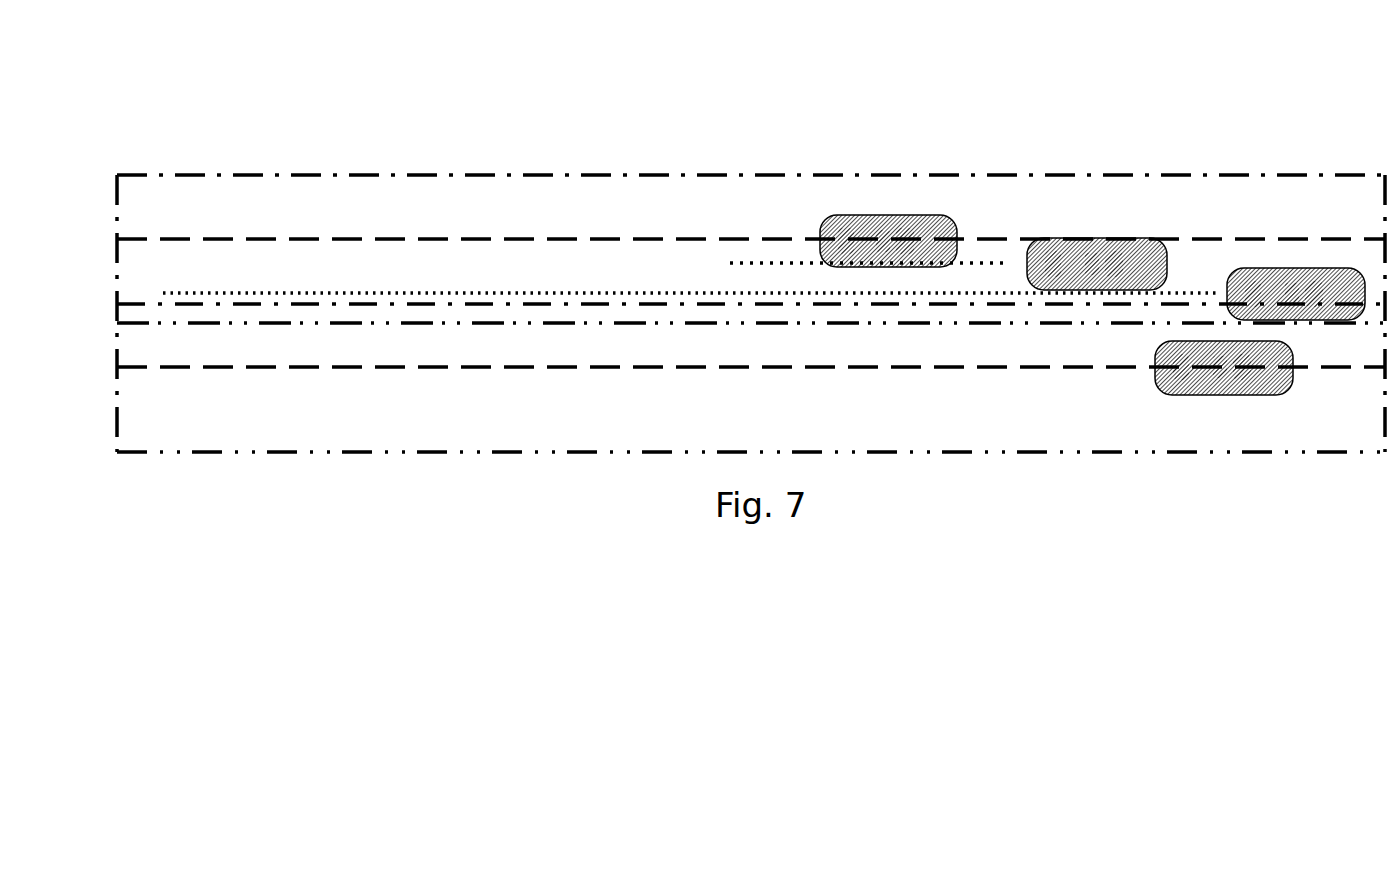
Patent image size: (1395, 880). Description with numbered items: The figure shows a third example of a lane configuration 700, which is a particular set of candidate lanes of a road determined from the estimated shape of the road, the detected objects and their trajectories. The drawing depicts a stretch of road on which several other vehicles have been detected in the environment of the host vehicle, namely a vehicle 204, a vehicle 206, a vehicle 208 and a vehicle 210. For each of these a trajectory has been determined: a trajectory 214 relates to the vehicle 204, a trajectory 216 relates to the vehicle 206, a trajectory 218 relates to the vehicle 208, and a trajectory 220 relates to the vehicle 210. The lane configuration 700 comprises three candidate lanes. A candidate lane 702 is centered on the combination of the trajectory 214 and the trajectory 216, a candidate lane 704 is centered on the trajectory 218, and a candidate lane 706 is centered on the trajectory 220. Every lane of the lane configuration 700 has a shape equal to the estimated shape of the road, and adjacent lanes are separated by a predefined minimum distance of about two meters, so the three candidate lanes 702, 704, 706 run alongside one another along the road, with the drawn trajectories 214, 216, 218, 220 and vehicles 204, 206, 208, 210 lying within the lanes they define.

The lane configuration 700 is at (162, 123).
The candidate lane 702 is at (117, 207).
The candidate lane 704 is at (117, 423).
The candidate lane 706 is at (117, 318).
The trajectory 214 is at (322, 240).
The trajectory 216 is at (770, 263).
The trajectory 218 is at (558, 370).
The trajectory 220 is at (667, 297).
The vehicle 204 is at (920, 218).
The vehicle 206 is at (1073, 240).
The vehicle 208 is at (1205, 337).
The vehicle 210 is at (1328, 268).